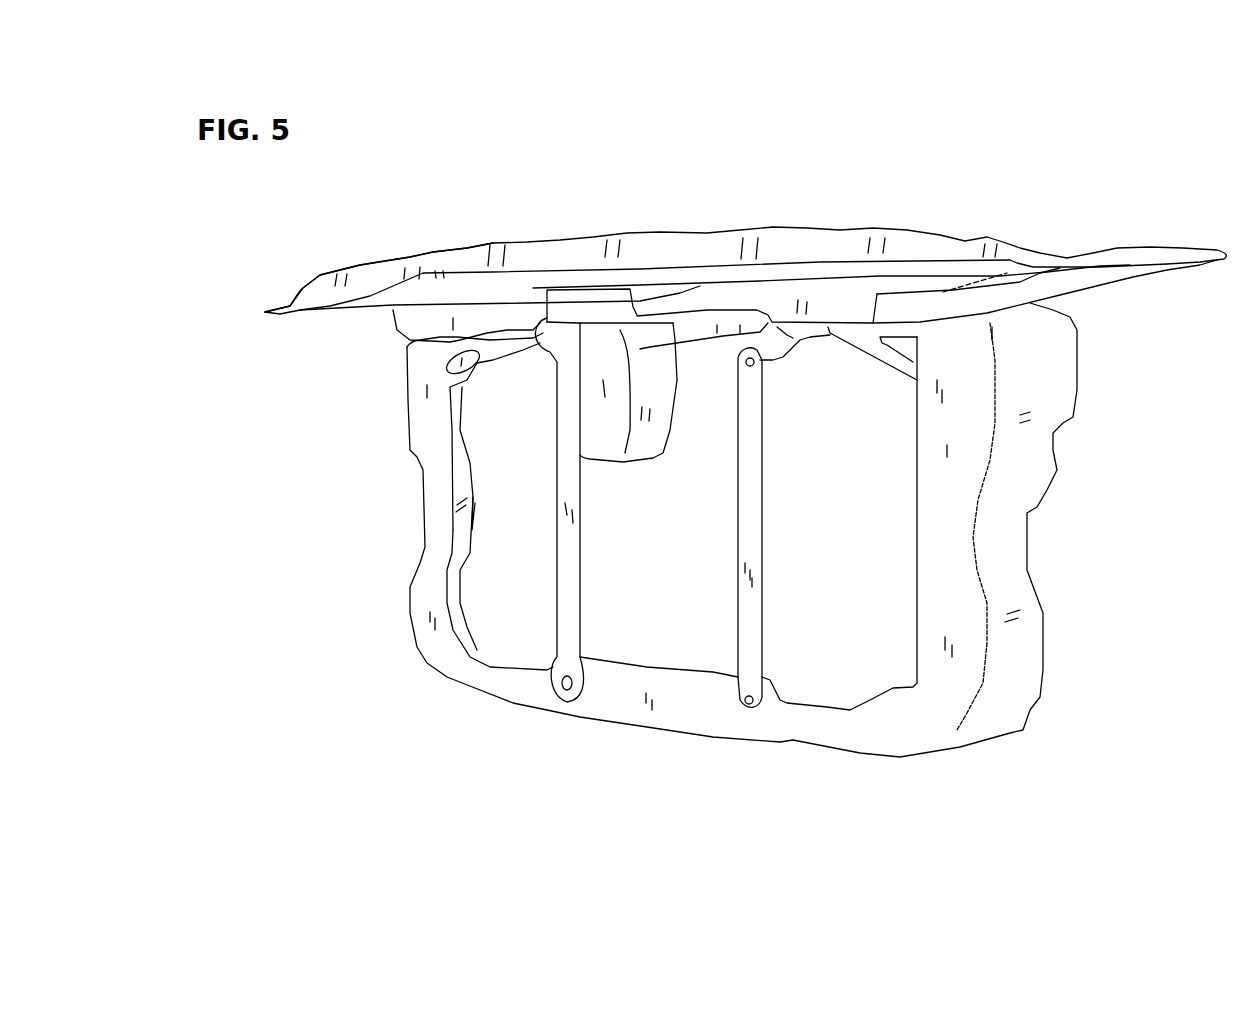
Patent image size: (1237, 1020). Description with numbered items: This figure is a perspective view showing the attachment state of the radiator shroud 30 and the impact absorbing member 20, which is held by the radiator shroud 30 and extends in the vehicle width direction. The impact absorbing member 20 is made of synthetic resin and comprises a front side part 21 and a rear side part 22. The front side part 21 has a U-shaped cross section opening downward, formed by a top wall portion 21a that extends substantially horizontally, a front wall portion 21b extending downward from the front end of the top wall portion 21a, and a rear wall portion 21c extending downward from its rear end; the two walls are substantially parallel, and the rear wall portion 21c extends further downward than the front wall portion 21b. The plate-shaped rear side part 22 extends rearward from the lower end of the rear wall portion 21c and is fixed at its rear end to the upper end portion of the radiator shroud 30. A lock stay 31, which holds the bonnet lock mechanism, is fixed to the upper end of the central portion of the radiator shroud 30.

The impact absorbing member 20 is at (700, 248).
The front side part 21 is at (822, 230).
The top wall portion 21a is at (745, 236).
The front wall portion 21b is at (553, 247).
The rear wall portion 21c is at (953, 268).
The rear side part 22 is at (927, 262).
The radiator shroud 30 is at (1021, 487).
The lock stay 31 is at (567, 311).